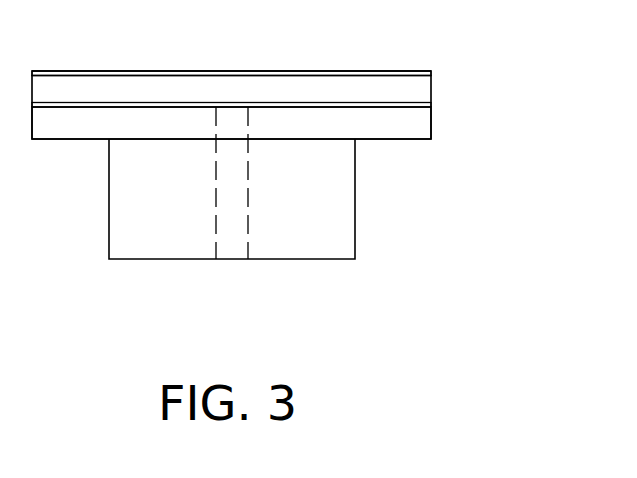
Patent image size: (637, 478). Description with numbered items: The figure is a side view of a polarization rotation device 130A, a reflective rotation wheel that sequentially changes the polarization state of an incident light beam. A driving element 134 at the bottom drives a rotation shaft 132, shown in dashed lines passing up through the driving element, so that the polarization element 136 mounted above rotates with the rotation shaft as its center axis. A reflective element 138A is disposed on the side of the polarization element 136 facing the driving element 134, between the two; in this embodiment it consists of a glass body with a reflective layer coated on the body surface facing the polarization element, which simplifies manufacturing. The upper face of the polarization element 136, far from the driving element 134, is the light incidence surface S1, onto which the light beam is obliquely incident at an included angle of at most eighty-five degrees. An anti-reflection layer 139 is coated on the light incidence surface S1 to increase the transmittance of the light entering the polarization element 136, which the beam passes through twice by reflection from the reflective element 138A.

The light incidence surface S1 is at (394, 74).
The anti-reflection layer 139 is at (420, 72).
The polarization element 136 is at (424, 86).
The reflective element 138A is at (555, 81).
The driving element 134 is at (343, 204).
The rotation shaft 132 is at (229, 250).
The polarization rotation device 130A is at (562, 355).